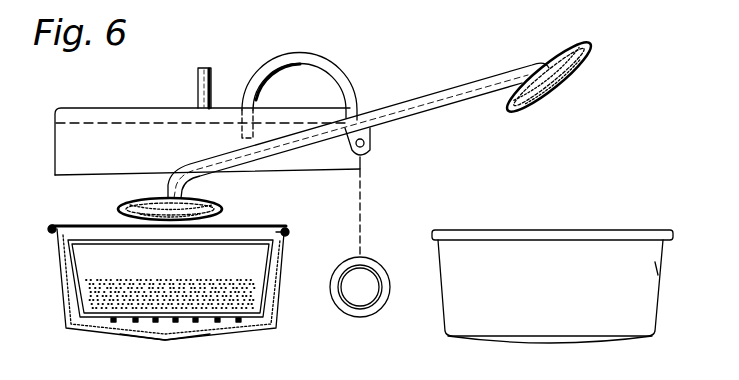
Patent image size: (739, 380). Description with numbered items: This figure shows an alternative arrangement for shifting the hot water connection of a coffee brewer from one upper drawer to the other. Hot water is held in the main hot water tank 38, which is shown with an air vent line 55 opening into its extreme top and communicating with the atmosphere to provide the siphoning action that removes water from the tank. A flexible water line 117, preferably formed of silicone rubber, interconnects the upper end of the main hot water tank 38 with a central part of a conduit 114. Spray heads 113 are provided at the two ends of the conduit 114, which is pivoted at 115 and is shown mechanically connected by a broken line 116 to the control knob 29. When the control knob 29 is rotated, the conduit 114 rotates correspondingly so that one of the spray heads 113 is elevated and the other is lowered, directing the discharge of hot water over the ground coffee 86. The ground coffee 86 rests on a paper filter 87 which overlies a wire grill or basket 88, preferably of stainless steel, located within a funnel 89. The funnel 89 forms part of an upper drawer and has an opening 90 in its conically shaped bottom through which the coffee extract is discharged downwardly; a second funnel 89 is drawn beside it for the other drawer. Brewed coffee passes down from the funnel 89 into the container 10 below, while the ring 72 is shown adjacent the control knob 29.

The container 10 is at (552, 305).
The control knob 29 is at (372, 283).
The main hot water tank 38 is at (62, 142).
The air vent line 55 is at (206, 77).
The ring flange 72 is at (346, 262).
The ground coffee 86 is at (187, 280).
The paper filter 87 is at (264, 238).
The wire grill or basket 88 is at (266, 291).
The funnel 89 is at (284, 240).
The opening 90 is at (170, 340).
The spray heads 113 is at (590, 77).
The conduit 114 is at (418, 96).
The pivot 115 is at (375, 140).
The broken line 116 is at (363, 188).
The flexible water line 117 is at (296, 58).